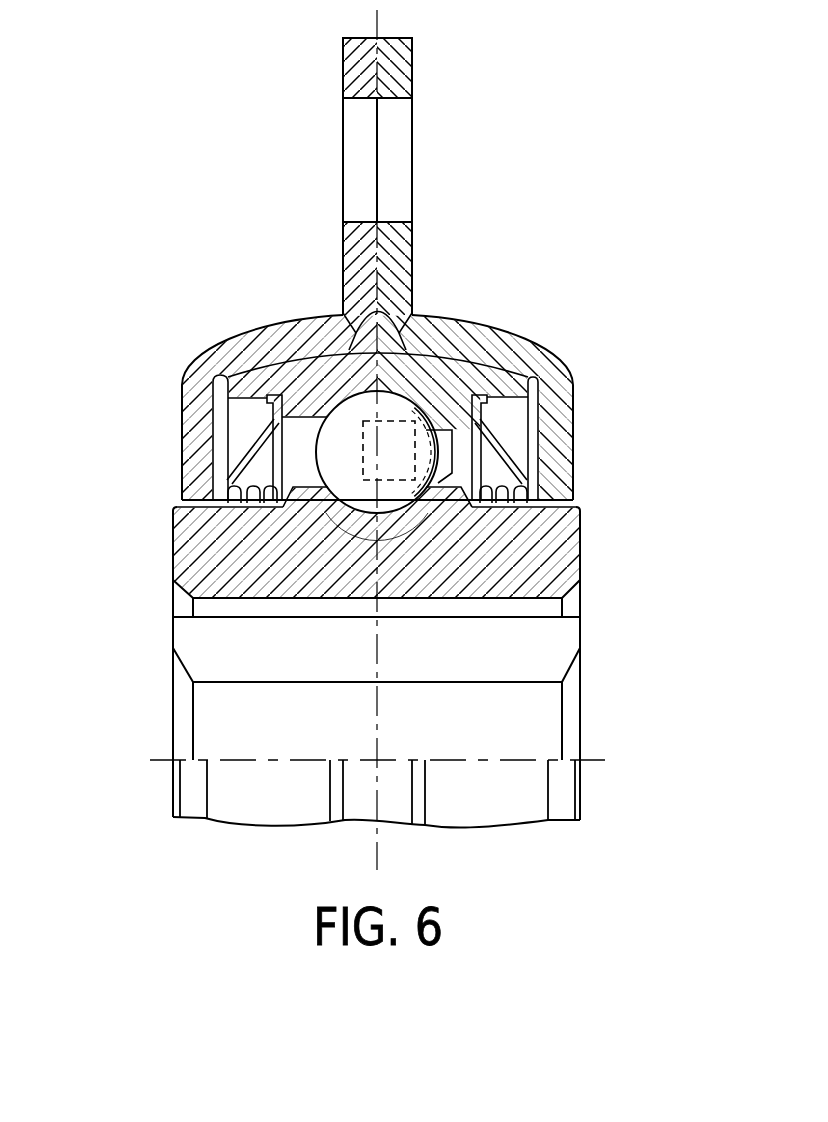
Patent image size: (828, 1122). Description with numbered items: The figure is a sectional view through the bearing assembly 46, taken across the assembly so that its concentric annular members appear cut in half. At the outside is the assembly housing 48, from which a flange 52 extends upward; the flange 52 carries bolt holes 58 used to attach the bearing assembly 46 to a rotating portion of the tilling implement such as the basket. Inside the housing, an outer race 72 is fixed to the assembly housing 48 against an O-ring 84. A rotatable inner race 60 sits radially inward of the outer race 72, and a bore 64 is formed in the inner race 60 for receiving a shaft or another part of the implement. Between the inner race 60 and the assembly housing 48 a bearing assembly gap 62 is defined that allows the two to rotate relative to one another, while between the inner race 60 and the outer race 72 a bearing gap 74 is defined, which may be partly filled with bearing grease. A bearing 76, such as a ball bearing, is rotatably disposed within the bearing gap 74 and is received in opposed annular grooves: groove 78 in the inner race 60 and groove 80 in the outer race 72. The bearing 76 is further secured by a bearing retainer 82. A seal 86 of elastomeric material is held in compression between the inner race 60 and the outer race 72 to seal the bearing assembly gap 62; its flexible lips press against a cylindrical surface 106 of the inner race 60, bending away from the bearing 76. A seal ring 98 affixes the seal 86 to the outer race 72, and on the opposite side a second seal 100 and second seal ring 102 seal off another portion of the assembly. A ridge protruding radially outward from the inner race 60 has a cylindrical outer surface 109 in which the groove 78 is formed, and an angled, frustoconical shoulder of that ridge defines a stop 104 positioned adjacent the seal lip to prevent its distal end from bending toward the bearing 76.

The bearing assembly 46 is at (610, 115).
The assembly housing 48 is at (268, 245).
The flange 52 is at (397, 270).
The bolt holes 58 is at (397, 130).
The inner race 60 is at (545, 557).
The bearing assembly gap 62 is at (172, 502).
The bore 64 is at (528, 657).
The outer race 72 is at (492, 368).
The bearing gap 74 is at (310, 433).
The bearing 76 is at (420, 410).
The annular groove 78 is at (380, 510).
The annular groove 80 is at (412, 442).
The bearing retainer 82 is at (481, 440).
The O-ring 84 is at (366, 337).
The seal 86 is at (228, 479).
The seal ring 98 is at (246, 444).
The second seal 100 is at (530, 498).
The second seal ring 102 is at (538, 460).
The stop 104 is at (290, 505).
The cylindrical surface 106 is at (253, 497).
The cylindrical outer surface 109 is at (316, 490).